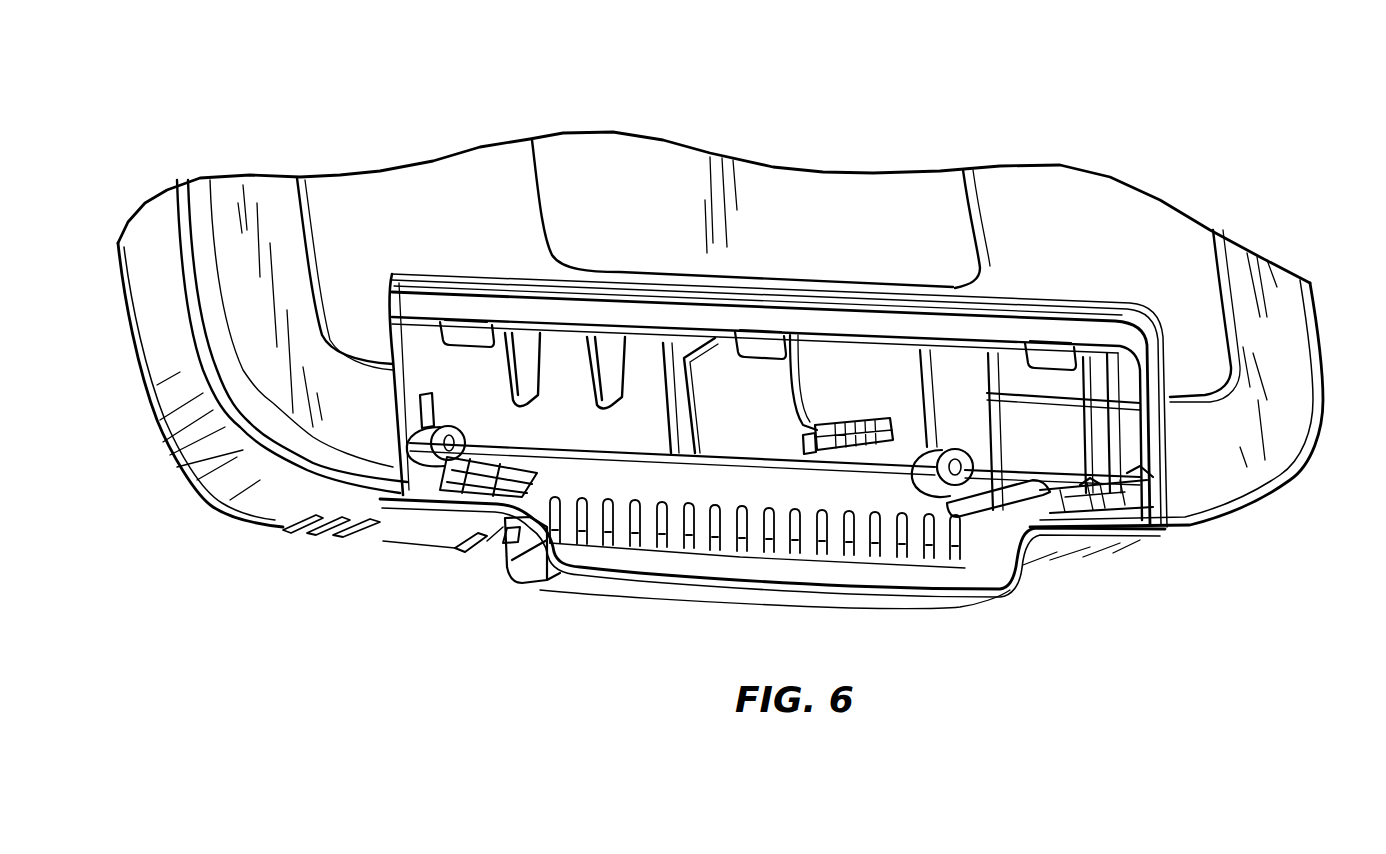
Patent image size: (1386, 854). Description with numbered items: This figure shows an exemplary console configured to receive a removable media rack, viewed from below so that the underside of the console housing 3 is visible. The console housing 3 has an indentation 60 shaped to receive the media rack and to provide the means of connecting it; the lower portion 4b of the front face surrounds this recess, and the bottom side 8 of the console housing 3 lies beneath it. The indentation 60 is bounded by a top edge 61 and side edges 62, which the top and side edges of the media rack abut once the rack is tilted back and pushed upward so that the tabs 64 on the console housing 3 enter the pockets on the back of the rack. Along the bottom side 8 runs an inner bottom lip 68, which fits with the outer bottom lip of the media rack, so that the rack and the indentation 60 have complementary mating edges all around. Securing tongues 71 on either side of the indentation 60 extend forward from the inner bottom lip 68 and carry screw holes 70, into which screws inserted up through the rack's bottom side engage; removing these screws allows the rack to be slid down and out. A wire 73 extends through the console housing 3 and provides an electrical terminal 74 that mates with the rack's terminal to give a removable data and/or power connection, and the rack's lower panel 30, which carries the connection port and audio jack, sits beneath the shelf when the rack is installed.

The console housing 3 is at (1277, 283).
The lower portion of the front face 4b is at (387, 203).
The bottom side 8 is at (393, 513).
The lower panel 30 is at (541, 567).
The indentation 60 is at (1107, 337).
The top edge of the indentation 61 is at (995, 315).
The side edges of the indentation 62 is at (1150, 355).
The tabs 64 is at (470, 332).
The inner bottom lip 68 is at (622, 578).
The screw holes 70 is at (480, 540).
The securing tongues 71 is at (513, 535).
The wire 73 is at (803, 393).
The electrical terminal 74 is at (858, 450).